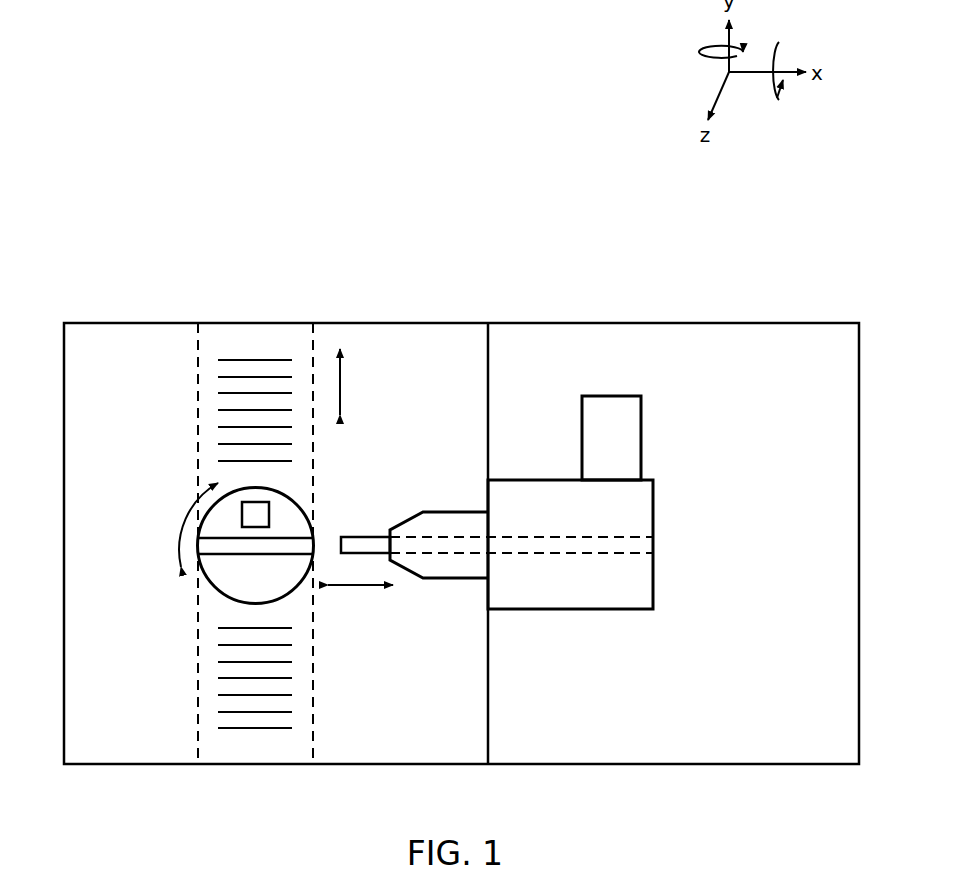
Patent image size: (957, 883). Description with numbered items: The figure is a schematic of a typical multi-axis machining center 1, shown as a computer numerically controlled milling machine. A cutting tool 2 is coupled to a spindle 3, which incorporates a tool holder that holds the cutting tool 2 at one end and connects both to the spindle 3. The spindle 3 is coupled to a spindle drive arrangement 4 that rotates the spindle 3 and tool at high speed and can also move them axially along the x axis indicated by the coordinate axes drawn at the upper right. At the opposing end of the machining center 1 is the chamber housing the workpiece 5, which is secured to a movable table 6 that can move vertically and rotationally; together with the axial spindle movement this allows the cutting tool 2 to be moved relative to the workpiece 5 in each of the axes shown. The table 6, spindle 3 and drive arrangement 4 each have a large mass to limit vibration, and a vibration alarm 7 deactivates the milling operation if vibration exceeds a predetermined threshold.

The multi-axis machining center 1 is at (718, 286).
The cutting tool 2 is at (353, 537).
The spindle 3 is at (430, 525).
The spindle drive arrangement 4 is at (615, 585).
The workpiece 5 is at (255, 512).
The movable table 6 is at (197, 547).
The vibration alarm 7 is at (627, 424).